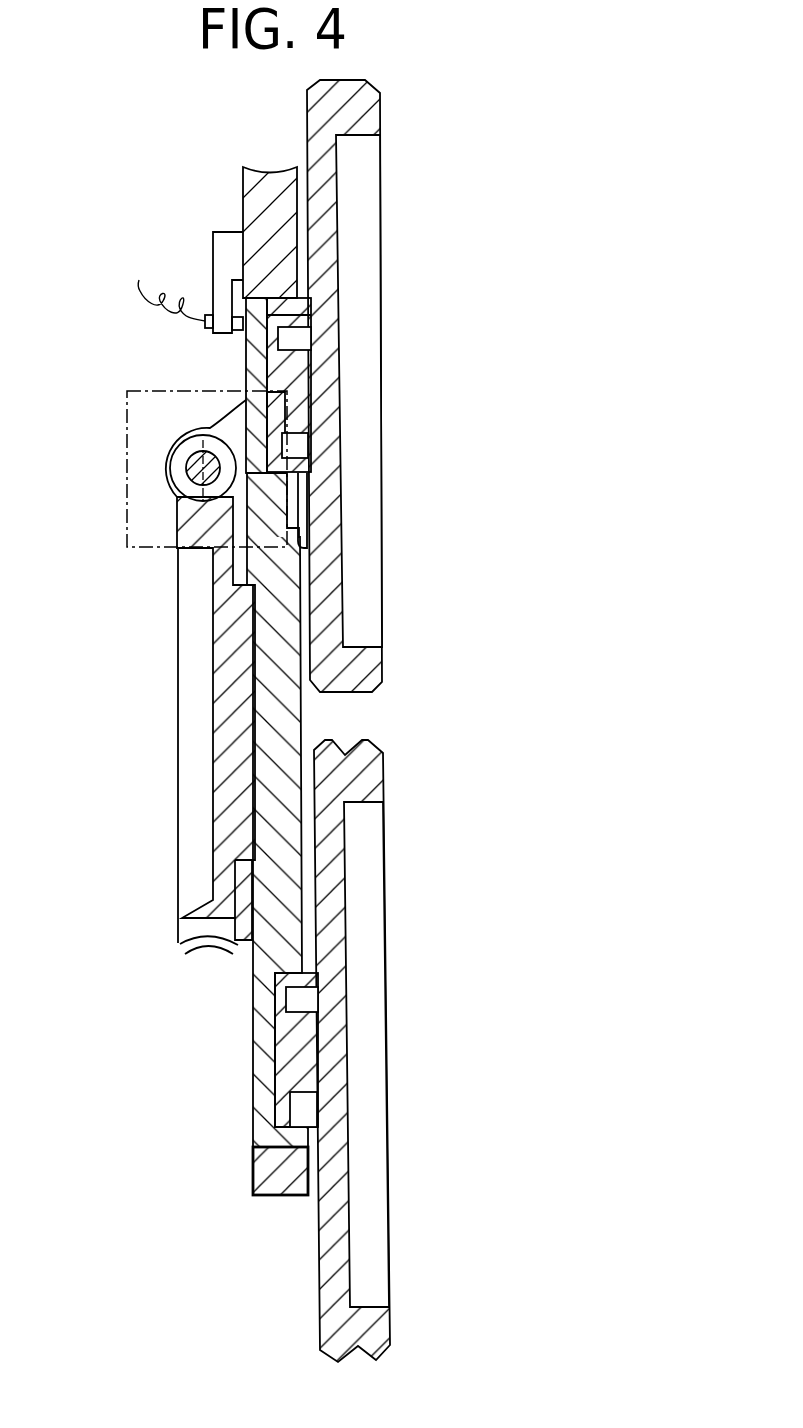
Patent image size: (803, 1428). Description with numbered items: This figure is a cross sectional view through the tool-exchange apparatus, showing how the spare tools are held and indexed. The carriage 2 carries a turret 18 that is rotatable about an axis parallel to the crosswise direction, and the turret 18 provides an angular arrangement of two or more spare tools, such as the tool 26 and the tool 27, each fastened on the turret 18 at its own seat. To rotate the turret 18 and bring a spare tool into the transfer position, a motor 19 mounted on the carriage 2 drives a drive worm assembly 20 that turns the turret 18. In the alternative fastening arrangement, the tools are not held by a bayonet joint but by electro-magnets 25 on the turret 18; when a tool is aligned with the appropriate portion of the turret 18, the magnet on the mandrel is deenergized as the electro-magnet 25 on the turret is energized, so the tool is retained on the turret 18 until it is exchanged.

The carriage 2 is at (270, 1170).
The turret 18 is at (270, 723).
The motor 19 is at (127, 405).
The drive worm assembly 20 is at (203, 469).
The electro-magnets 25 is at (290, 1053).
The tool 26 is at (352, 115).
The tool 27 is at (350, 780).